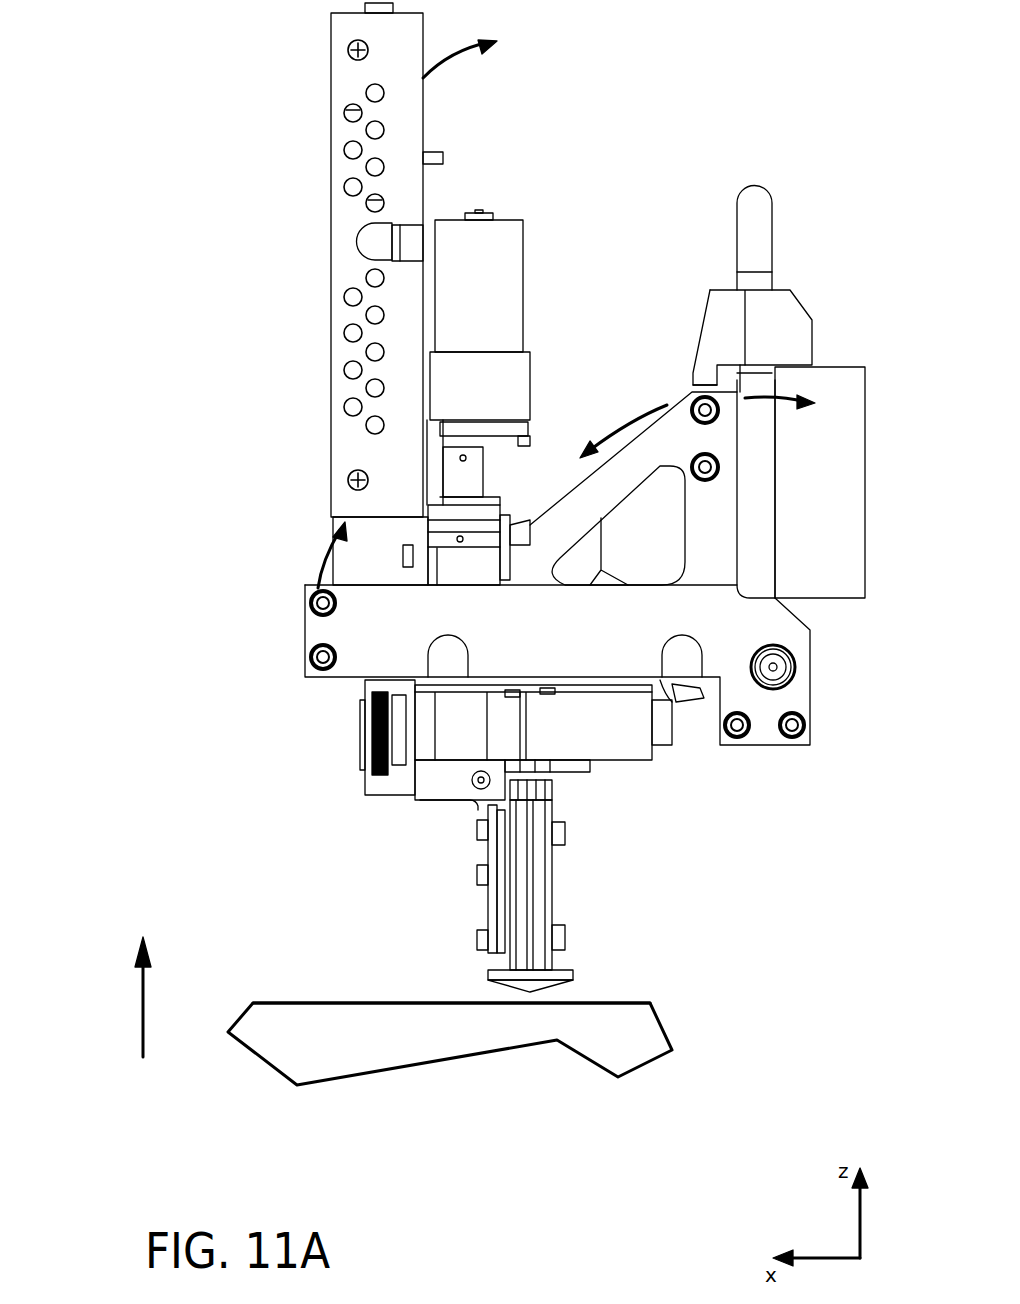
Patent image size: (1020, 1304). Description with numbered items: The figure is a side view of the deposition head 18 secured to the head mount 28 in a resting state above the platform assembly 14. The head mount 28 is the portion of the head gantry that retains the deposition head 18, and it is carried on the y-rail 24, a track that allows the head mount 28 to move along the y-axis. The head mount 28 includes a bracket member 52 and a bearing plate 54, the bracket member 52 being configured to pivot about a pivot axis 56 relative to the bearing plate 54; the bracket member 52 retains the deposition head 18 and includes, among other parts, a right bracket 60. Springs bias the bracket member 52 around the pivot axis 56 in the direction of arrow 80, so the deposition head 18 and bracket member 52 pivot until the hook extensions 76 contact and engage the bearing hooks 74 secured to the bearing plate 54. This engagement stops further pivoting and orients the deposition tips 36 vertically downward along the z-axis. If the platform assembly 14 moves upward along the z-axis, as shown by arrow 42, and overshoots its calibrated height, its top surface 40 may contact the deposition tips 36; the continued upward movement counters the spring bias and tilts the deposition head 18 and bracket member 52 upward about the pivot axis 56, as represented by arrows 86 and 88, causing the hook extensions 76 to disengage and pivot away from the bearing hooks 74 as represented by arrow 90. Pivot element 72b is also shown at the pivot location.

The platform assembly 14 is at (645, 1033).
The deposition head 18 is at (340, 250).
The y-rail 24 is at (850, 455).
The head mount 28 is at (240, 390).
The deposition tips 36 is at (475, 985).
The top surface 40 is at (290, 1003).
The arrow 42 is at (140, 990).
The bracket member 52 is at (280, 660).
The bearing plate 54 is at (795, 318).
The pivot axis 56 is at (773, 667).
The right bracket 60 is at (718, 680).
The pivot pin 72b is at (778, 652).
The bearing hooks 74 is at (703, 378).
The hook extensions 76 is at (733, 385).
The arrow 80 is at (620, 425).
The arrow 86 is at (450, 62).
The arrow 88 is at (295, 563).
The arrow 90 is at (765, 400).